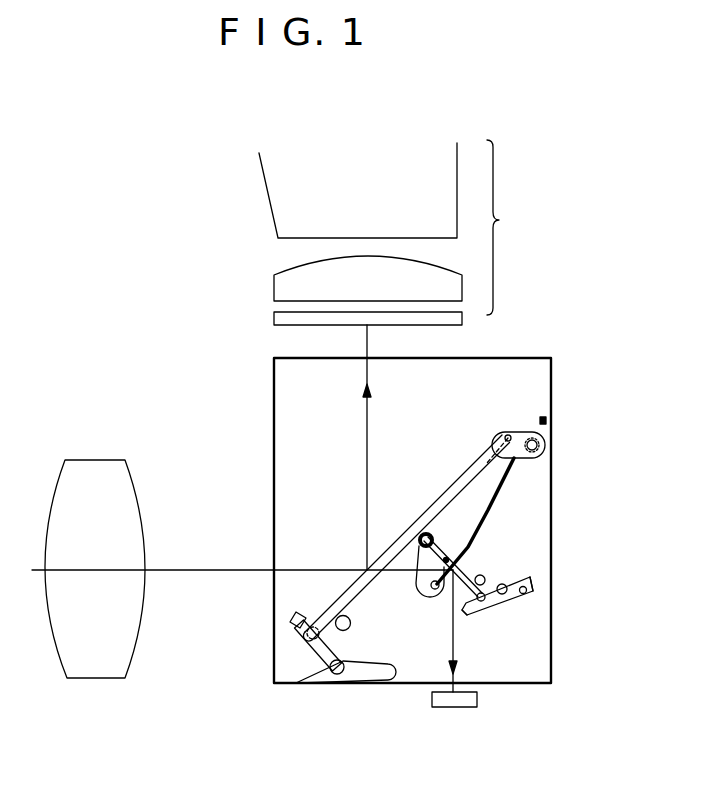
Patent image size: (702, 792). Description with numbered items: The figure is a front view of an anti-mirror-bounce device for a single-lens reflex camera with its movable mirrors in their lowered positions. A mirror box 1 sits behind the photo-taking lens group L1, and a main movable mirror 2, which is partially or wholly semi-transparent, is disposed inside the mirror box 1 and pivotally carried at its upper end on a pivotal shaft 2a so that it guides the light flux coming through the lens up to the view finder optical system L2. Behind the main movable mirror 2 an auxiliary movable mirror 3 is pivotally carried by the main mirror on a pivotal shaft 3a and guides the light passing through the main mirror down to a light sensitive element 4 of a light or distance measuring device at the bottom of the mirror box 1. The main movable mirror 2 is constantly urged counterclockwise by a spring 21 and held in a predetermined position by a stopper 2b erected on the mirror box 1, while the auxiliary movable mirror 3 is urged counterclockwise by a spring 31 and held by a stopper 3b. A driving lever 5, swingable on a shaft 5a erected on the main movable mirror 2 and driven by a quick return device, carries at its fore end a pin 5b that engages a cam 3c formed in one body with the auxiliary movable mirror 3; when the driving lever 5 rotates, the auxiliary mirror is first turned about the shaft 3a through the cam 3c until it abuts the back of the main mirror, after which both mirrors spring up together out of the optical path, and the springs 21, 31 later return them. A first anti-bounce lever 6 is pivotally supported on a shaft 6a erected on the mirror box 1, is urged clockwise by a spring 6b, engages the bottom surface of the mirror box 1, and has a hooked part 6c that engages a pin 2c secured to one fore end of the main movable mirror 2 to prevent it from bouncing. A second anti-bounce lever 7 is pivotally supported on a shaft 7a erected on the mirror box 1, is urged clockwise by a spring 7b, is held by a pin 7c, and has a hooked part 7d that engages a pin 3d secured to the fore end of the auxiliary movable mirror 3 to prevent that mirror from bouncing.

The mirror box 1 is at (512, 366).
The main movable mirror 2 is at (435, 505).
The pivotal shaft 2a is at (548, 452).
The stopper 2b is at (351, 629).
The pin 2c is at (300, 631).
The spring 21 is at (541, 428).
The auxiliary movable mirror 3 is at (470, 583).
The pivotal shaft 3a is at (420, 532).
The stopper 3b is at (485, 578).
The cam 3c is at (417, 582).
The pin 3d is at (483, 602).
The spring 31 is at (452, 552).
The light sensitive element 4 is at (464, 708).
The driving lever 5 is at (502, 480).
The shaft 5a is at (509, 434).
The pin 5b is at (436, 590).
The anti-bounce lever 6 is at (312, 652).
The shaft 6a is at (337, 676).
The spring 6b is at (308, 688).
The hooked part 6c is at (299, 613).
The anti-bounce lever 7 is at (479, 606).
The shaft 7a is at (503, 596).
The spring 7b is at (523, 595).
The pin 7c is at (533, 585).
The hooked part 7d is at (463, 614).
The photo-taking lens group L1 is at (135, 650).
The view finder optical system L2 is at (391, 232).